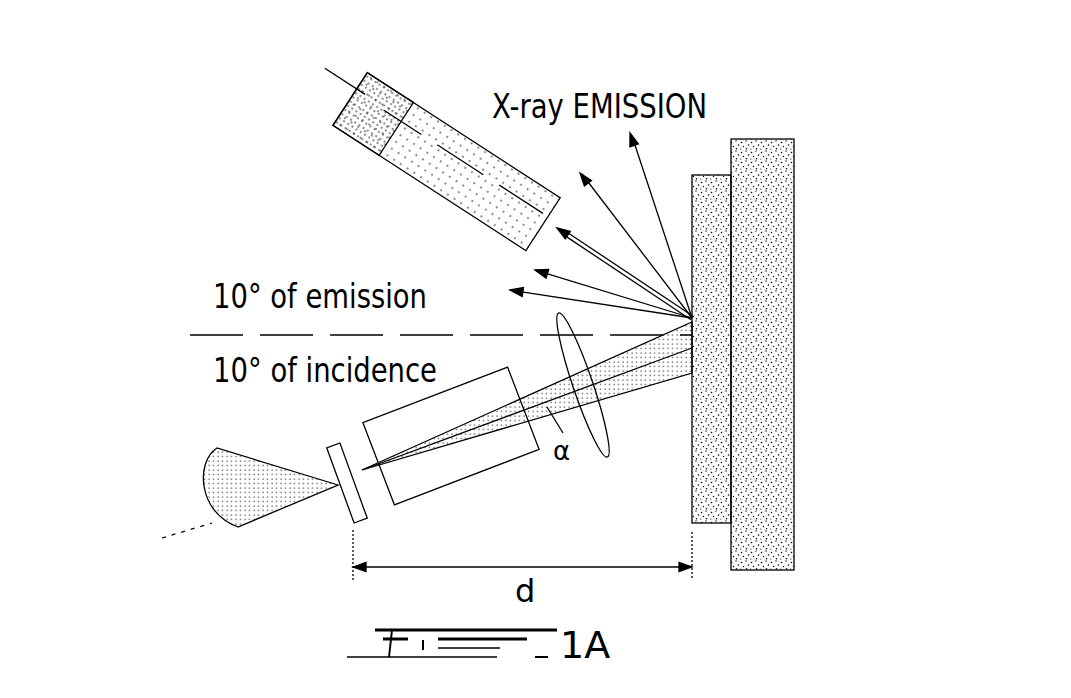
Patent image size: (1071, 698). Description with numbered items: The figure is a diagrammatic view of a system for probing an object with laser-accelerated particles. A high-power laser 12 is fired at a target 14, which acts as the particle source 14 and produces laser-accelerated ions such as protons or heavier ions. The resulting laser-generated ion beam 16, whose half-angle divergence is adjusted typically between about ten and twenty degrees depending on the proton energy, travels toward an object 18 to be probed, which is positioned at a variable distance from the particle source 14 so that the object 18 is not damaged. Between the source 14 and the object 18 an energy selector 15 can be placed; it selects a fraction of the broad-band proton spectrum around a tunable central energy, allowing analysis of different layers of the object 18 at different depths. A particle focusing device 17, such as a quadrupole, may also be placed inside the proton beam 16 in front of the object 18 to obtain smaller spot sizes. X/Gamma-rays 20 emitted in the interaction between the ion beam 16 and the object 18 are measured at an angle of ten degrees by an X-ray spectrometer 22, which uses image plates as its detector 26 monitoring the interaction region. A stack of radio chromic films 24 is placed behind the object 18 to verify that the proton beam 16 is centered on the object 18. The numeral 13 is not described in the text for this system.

The high-power laser 12 is at (337, 487).
The reference numeral 13 is at (148, 691).
The target 14 is at (372, 518).
The energy selector 15 is at (488, 470).
The laser-generated ion beam 16 is at (662, 383).
The particle focusing device 17 is at (607, 457).
The object to be probed 18 is at (690, 499).
The X/Gamma-rays 20 is at (630, 208).
The X-ray spectrometer 22 is at (442, 118).
The stack of radio chromic films 24 is at (763, 372).
The detector 26 is at (400, 72).